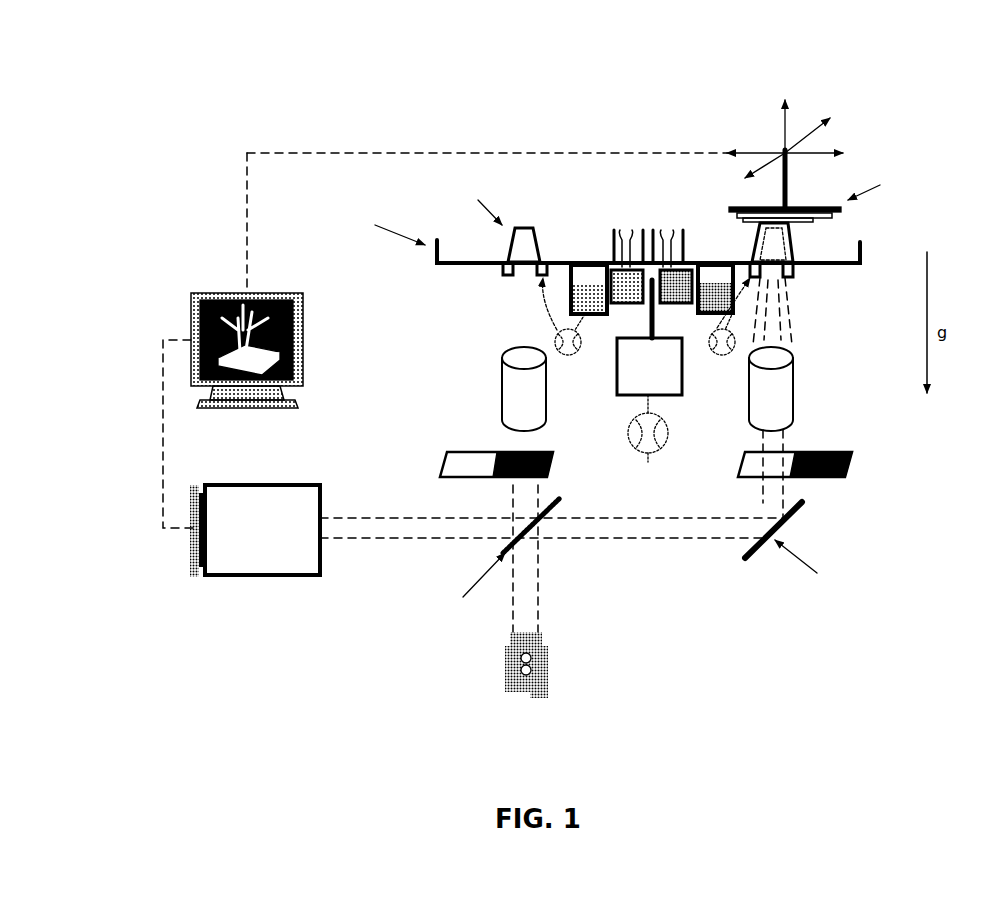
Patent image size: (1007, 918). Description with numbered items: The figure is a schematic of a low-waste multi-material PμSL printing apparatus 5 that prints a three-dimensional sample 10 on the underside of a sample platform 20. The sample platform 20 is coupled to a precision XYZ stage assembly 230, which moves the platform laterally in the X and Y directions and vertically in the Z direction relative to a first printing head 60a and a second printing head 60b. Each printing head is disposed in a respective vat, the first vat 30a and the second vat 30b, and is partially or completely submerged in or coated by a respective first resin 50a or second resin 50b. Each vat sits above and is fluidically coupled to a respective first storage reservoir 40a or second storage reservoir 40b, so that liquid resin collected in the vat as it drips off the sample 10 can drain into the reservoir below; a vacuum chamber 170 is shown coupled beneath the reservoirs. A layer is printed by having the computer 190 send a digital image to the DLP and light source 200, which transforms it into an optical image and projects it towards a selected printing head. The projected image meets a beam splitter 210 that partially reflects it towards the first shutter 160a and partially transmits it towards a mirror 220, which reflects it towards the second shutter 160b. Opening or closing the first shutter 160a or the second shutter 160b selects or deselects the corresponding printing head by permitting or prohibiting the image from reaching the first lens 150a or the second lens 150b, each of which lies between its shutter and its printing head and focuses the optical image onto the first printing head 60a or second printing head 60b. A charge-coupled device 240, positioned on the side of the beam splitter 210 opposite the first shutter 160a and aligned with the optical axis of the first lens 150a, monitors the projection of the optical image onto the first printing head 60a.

The printing apparatus 5 is at (290, 120).
The sample 10 is at (827, 207).
The sample platform 20 is at (852, 195).
The first vat 30a is at (437, 240).
The second vat 30b is at (865, 243).
The first storage reservoir 40a is at (593, 282).
The second storage reservoir 40b is at (728, 282).
The first resin 50a is at (603, 278).
The second resin 50b is at (715, 275).
The first printing head 60a is at (508, 228).
The second printing head 60b is at (758, 207).
The first lens 150a is at (508, 380).
The second lens 150b is at (783, 370).
The first shutter 160a is at (503, 450).
The second shutter 160b is at (818, 478).
The vacuum chamber 170 is at (623, 390).
The computer 190 is at (225, 293).
The DLP and light source 200 is at (210, 490).
The beam splitter 210 is at (540, 522).
The mirror 220 is at (762, 550).
The XYZ stage assembly 230 is at (785, 148).
The charge-coupled device (CCD) 240 is at (505, 665).